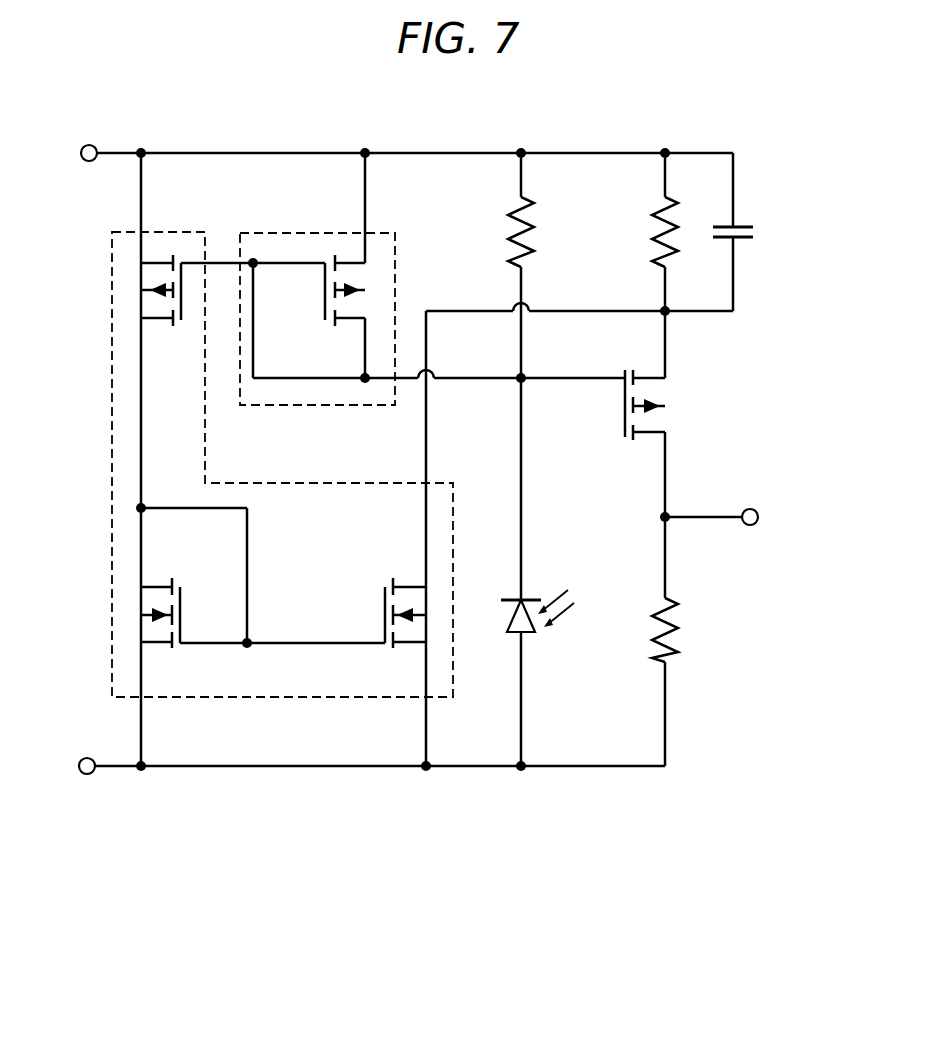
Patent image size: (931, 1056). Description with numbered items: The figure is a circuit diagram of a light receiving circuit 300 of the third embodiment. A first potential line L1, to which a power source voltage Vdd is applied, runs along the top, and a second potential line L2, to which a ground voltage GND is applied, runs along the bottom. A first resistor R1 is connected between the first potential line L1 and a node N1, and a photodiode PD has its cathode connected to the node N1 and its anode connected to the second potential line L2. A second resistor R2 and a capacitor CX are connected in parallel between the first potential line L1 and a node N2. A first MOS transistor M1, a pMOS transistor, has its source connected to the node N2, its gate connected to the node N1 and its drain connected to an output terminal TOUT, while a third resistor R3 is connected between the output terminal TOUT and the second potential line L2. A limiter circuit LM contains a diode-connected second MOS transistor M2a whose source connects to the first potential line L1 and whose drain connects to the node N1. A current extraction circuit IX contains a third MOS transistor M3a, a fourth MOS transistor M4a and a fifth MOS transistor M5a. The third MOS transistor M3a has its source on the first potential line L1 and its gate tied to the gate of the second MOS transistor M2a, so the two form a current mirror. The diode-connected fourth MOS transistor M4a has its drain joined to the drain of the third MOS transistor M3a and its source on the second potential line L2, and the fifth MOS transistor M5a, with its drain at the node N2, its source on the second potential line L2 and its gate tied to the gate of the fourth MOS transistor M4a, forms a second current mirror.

The light receiving circuit 300 is at (452, 910).
The first potential line L1 is at (97, 150).
The second potential line L2 is at (95, 770).
The power source voltage Vdd is at (91, 133).
The ground voltage GND is at (87, 787).
The current extraction circuit IX is at (195, 232).
The limiter circuit LM is at (305, 233).
The first MOS transistor M1 is at (645, 435).
The second MOS transistor M2a is at (350, 320).
The third MOS transistor M3a is at (160, 320).
The fourth MOS transistor M4a is at (175, 583).
The fifth MOS transistor M5a is at (410, 583).
The first resistor R1 is at (508, 212).
The second resistor R2 is at (652, 213).
The third resistor R3 is at (673, 617).
The capacitor CX is at (740, 225).
The photodiode PD is at (520, 632).
The node N1 is at (521, 378).
The node N2 is at (665, 311).
The output terminal TOUT is at (748, 508).